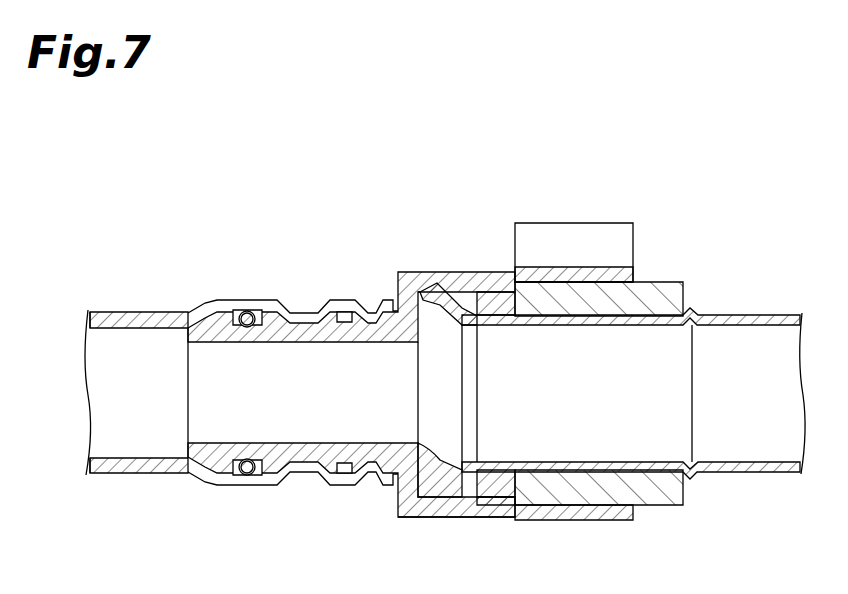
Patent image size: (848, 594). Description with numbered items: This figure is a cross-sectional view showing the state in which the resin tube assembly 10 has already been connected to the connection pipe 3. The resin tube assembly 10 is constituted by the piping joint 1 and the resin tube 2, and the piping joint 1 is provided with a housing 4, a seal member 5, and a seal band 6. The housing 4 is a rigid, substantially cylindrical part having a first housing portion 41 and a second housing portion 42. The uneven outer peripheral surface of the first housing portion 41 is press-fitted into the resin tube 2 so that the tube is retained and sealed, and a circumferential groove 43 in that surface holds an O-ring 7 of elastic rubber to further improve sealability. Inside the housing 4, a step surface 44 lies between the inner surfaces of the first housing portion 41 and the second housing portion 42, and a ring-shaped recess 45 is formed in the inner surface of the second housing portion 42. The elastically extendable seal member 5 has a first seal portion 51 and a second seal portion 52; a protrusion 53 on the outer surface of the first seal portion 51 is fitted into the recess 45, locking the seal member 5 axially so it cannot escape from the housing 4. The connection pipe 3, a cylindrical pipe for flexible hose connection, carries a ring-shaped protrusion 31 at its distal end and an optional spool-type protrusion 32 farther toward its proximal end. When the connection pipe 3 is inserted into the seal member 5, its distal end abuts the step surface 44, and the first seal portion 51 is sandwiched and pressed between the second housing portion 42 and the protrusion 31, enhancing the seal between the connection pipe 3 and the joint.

The piping joint 1 is at (660, 275).
The resin tube 2 is at (128, 312).
The connection pipe 3 is at (742, 314).
The housing 4 is at (395, 270).
The seal member 5 is at (545, 506).
The seal band 6 is at (571, 223).
The O-ring 7 is at (245, 476).
The resin tube assembly 10 is at (296, 238).
The protrusion 31 is at (460, 518).
The protrusion (spool) 32 is at (696, 478).
The first housing portion 41 is at (322, 300).
The second housing portion 42 is at (477, 288).
The circumferential groove 43 is at (249, 311).
The step surface 44 is at (425, 450).
The recess 45 is at (480, 332).
The first seal portion 51 is at (498, 506).
The second seal portion 52 is at (605, 521).
The protrusion 53 is at (428, 283).